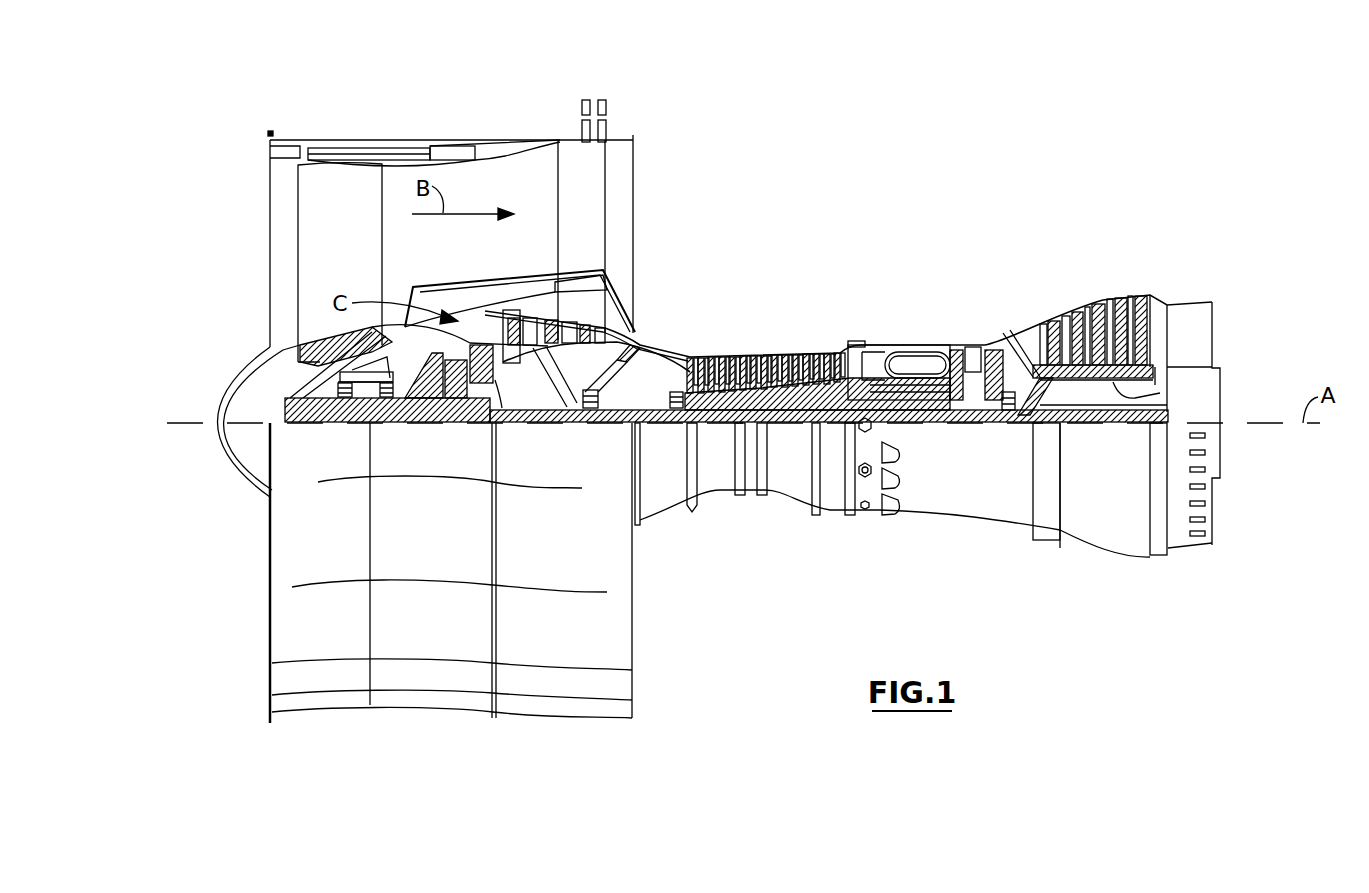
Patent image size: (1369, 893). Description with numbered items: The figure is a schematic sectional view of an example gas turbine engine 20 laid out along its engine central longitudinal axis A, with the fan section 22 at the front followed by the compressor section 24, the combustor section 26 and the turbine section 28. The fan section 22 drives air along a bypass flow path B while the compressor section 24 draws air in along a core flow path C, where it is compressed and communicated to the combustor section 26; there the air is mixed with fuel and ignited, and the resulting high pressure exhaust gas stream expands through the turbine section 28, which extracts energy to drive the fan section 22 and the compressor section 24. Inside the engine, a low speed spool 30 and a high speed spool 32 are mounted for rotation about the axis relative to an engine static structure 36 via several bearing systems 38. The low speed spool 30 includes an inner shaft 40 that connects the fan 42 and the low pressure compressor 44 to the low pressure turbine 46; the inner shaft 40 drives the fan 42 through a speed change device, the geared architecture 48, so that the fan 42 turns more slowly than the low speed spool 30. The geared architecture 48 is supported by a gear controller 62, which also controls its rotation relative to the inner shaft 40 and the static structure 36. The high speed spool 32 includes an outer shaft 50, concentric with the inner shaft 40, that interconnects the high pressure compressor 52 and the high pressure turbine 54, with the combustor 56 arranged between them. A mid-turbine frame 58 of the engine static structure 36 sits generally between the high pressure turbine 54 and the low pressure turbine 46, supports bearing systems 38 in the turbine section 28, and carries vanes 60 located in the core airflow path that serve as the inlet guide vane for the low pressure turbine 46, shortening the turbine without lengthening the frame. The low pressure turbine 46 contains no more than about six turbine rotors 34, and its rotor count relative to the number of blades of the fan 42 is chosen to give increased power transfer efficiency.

The gas turbine engine 20 is at (918, 182).
The fan section 22 is at (478, 114).
The compressor section 24 is at (490, 257).
The combustor section 26 is at (993, 257).
The turbine section 28 is at (1003, 257).
The low speed spool 30 is at (789, 435).
The high speed spool 32 is at (828, 388).
The turbine rotors 34 is at (1160, 394).
The engine static structure 36 is at (832, 518).
The bearing systems 38 is at (348, 420).
The inner shaft 40 is at (660, 507).
The fan 42 is at (352, 266).
The low pressure compressor section 44 is at (567, 322).
The low pressure turbine section 46 is at (1100, 305).
The geared architecture 48 is at (455, 405).
The outer shaft 50 is at (912, 420).
The high pressure compressor section 52 is at (763, 388).
The high pressure turbine section 54 is at (970, 345).
The combustor 56 is at (905, 367).
The mid-turbine frame 58 is at (1020, 326).
The vanes 60 is at (1050, 398).
The gear controller 62 is at (495, 420).